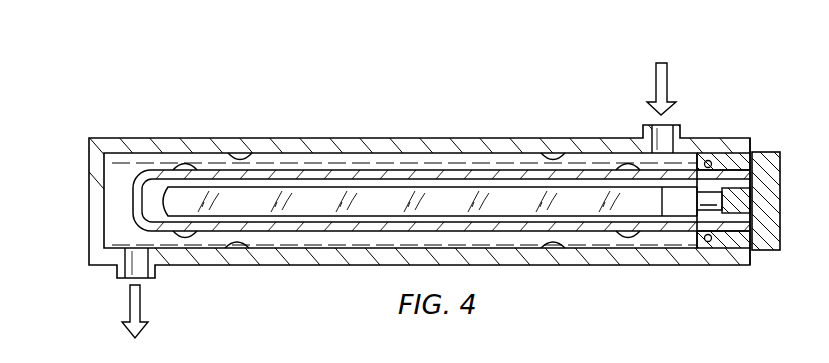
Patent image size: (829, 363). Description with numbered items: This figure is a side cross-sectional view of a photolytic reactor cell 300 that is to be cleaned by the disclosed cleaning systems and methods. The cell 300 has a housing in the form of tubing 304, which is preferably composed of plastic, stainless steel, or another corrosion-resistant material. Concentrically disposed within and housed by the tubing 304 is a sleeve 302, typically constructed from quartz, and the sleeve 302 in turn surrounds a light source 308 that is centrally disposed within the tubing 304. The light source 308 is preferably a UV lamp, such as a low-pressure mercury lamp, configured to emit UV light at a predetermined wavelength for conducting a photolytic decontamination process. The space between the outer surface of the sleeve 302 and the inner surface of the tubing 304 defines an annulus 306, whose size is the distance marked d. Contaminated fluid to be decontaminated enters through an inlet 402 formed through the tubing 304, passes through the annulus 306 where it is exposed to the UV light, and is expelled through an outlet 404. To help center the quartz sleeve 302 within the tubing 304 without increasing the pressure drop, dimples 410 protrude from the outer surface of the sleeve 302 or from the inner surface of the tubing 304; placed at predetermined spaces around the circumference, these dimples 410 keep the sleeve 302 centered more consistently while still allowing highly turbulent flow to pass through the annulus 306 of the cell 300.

The photolytic reactor cell 300 is at (515, 49).
The sleeve 302 is at (332, 170).
The tubing 304 is at (137, 139).
The annulus 306 is at (415, 163).
The light source 308 is at (318, 205).
The inlet 402 is at (667, 84).
The outlet 404 is at (128, 298).
The dimples 410 is at (186, 162).
The distance d is at (104, 172).